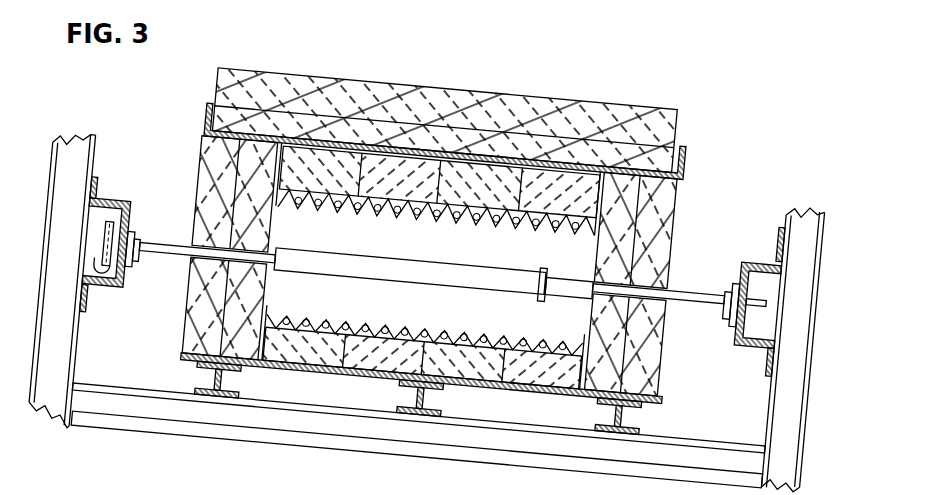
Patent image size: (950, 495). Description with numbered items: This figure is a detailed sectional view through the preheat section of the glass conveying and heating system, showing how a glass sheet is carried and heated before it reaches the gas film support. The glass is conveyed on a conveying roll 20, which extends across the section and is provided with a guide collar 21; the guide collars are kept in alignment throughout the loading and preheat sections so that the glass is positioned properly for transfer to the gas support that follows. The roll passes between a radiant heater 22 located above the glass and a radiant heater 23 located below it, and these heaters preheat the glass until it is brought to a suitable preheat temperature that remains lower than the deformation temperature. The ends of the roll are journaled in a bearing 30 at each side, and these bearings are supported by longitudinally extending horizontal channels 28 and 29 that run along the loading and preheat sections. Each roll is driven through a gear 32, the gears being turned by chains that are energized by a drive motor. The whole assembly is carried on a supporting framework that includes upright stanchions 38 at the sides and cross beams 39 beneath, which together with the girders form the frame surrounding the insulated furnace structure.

The conveying roll 20 is at (480, 272).
The guide collar 21 is at (547, 281).
The radiant heater 22 is at (425, 235).
The radiant heater 23 is at (447, 316).
The horizontal channel 28 is at (745, 267).
The horizontal channel 29 is at (127, 211).
The bearing 30 is at (133, 235).
The gear 32 is at (94, 283).
The stanchion 38 is at (78, 350).
The cross beam 39 is at (335, 409).